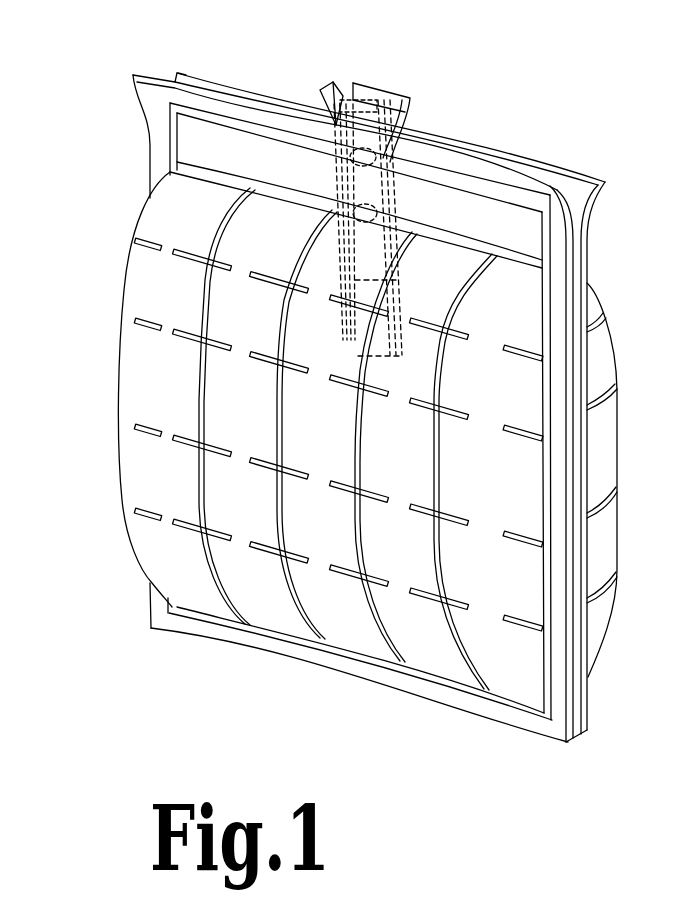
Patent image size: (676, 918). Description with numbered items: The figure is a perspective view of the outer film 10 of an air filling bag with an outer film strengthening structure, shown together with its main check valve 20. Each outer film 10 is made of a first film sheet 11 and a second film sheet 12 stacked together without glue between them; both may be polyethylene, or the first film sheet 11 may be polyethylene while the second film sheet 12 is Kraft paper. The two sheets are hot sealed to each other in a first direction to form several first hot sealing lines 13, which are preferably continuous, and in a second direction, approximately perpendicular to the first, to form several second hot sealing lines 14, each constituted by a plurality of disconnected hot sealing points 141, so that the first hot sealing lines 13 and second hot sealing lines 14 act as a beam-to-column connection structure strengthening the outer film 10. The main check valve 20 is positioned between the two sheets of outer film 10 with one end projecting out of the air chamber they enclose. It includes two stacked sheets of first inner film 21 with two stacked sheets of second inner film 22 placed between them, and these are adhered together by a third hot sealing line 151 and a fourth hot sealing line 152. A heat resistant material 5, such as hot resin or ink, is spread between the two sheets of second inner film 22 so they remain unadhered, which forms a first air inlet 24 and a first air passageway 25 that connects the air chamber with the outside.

The outer film 10 is at (612, 172).
The first film sheet 11 is at (593, 215).
The second film sheet 12 is at (556, 175).
The first hot sealing line 13 is at (308, 625).
The second hot sealing line 14 is at (112, 316).
The hot sealing point 141 is at (184, 438).
The third hot sealing line 151 is at (190, 165).
The fourth hot sealing line 152 is at (192, 112).
The main check valve 20 is at (380, 207).
The first inner film 21 is at (408, 108).
The second inner film 22 is at (346, 88).
The first air inlet 24 is at (363, 145).
The first air passageway 25 is at (378, 342).
The heat resistant material 5 is at (393, 177).